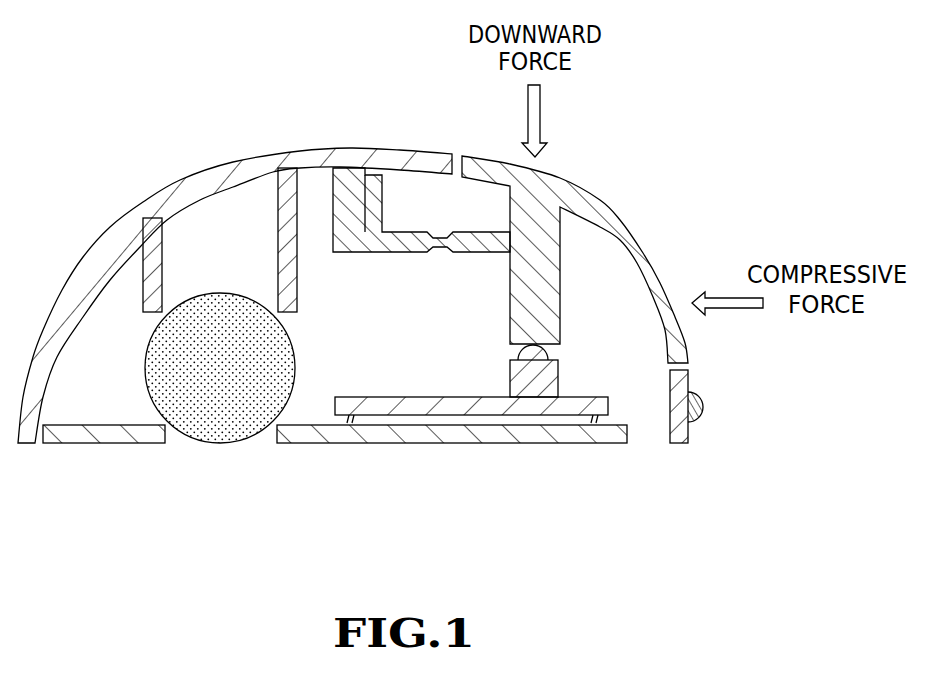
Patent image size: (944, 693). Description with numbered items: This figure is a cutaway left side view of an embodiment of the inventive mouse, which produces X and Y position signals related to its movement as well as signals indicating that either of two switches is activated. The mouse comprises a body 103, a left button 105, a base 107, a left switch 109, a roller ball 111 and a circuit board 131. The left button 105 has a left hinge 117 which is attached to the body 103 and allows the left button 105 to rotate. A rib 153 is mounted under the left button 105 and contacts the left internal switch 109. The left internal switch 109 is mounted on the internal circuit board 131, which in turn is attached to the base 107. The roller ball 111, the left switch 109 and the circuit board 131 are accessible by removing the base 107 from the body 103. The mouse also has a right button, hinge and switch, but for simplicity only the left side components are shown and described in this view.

The body 103 is at (180, 173).
The left button 105 is at (634, 228).
The base 107 is at (400, 446).
The left switch 109 is at (510, 384).
The roller ball 111 is at (149, 340).
The left hinge 117 is at (438, 226).
The circuit board 131 is at (388, 396).
The rib 153 is at (510, 292).